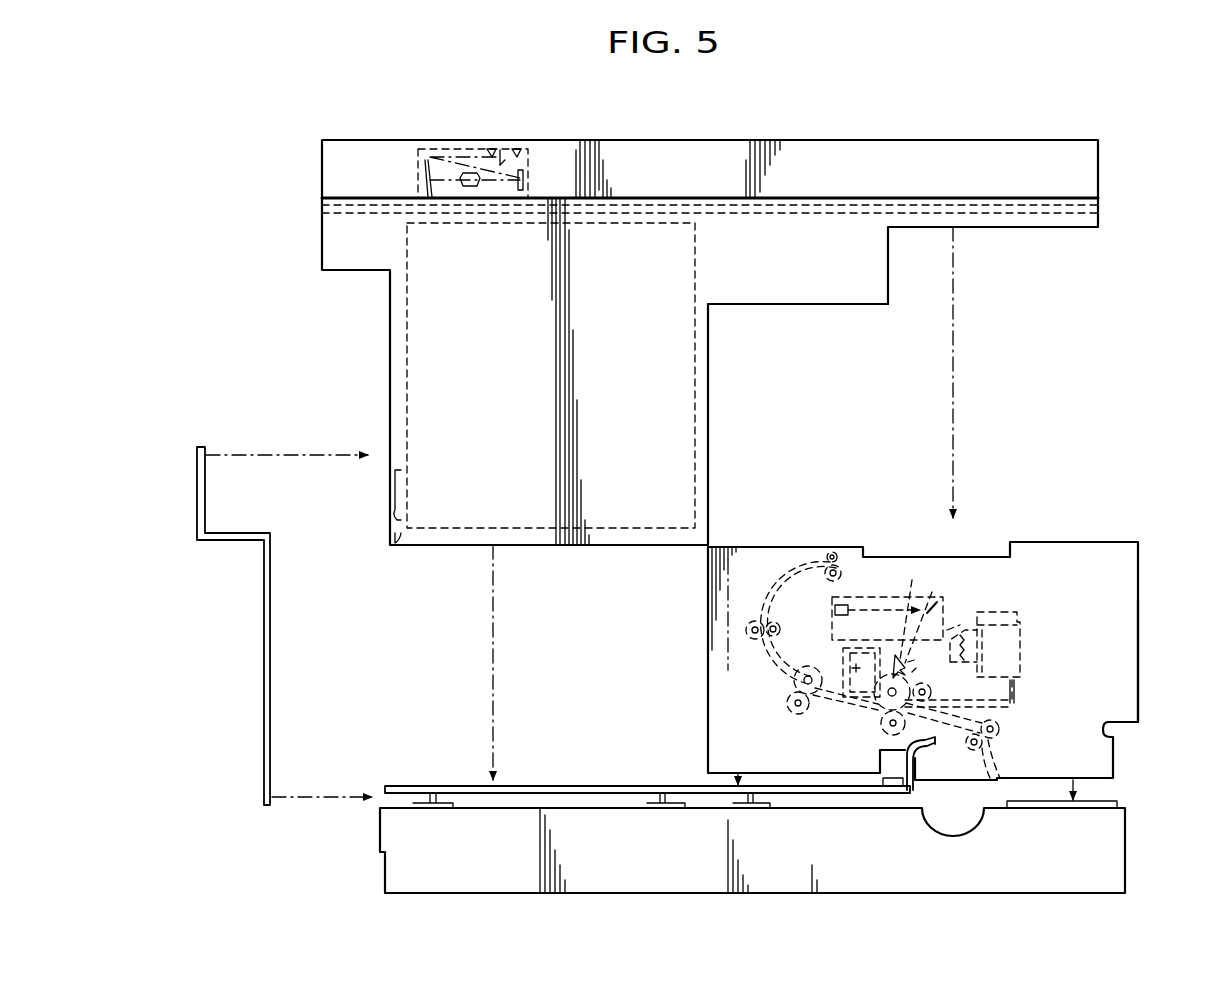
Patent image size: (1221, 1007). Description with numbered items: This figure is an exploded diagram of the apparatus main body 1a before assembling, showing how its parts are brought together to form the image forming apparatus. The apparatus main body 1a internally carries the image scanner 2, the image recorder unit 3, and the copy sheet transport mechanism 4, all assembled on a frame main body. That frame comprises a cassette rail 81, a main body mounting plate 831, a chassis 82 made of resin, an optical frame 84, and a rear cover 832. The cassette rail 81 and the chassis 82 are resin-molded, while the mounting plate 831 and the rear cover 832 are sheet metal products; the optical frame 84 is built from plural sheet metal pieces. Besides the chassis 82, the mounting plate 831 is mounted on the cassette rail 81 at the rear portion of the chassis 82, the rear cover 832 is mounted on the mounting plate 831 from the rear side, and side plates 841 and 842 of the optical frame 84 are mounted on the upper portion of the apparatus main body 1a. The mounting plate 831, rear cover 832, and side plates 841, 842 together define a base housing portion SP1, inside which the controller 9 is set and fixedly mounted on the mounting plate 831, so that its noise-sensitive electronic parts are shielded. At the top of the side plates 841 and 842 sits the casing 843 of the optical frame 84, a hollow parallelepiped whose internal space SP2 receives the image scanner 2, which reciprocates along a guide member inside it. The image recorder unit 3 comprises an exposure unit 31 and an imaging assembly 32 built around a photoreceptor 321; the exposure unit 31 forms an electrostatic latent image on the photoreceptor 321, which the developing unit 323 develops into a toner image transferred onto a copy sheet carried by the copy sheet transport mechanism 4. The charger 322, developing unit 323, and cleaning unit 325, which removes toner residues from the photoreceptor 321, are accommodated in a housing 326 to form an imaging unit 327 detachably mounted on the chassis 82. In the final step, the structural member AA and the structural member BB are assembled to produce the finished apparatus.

The apparatus main body 1a is at (1203, 119).
The image scanner 2 is at (470, 148).
The image recorder unit 3 is at (1064, 570).
The copy sheet transport mechanism 4 is at (806, 727).
The controller 9 is at (406, 340).
The exposure unit 31 is at (848, 597).
The imaging assembly 32 is at (1007, 722).
The cassette rail 81 is at (384, 860).
The chassis 82 is at (1123, 691).
The optical frame 84 is at (320, 130).
The photoreceptor 321 is at (876, 718).
The charger 322 is at (929, 620).
The developing unit 323 is at (1012, 696).
The cleaning unit 325 is at (845, 660).
The housing 326 is at (1017, 618).
The imaging unit 327 is at (1038, 654).
The main body mounting plate 831 is at (608, 786).
The rear cover 832 is at (264, 655).
The side plate 841 is at (798, 328).
The side plate 842 is at (765, 290).
The casing 843 is at (797, 141).
The base housing portion SP1 is at (470, 751).
The internal space SP2 is at (1101, 185).
The structural member AA is at (1152, 533).
The structural member BB is at (937, 132).